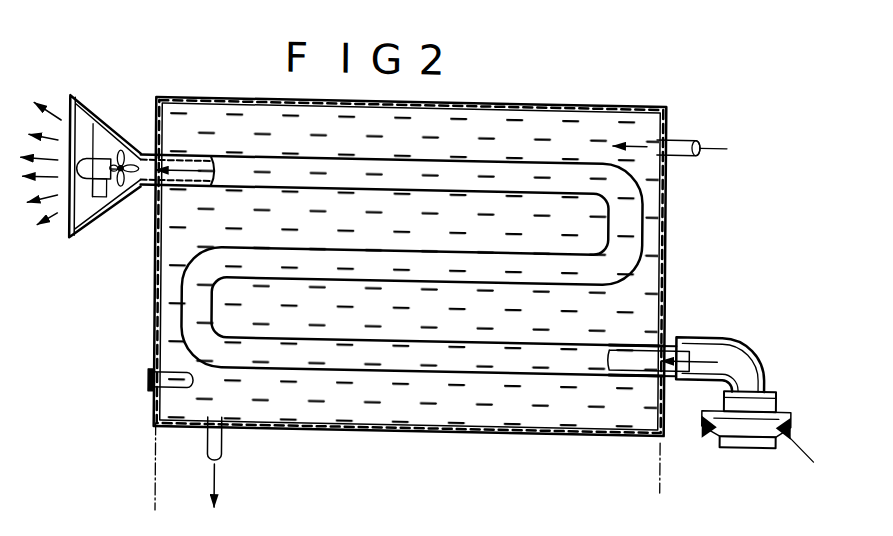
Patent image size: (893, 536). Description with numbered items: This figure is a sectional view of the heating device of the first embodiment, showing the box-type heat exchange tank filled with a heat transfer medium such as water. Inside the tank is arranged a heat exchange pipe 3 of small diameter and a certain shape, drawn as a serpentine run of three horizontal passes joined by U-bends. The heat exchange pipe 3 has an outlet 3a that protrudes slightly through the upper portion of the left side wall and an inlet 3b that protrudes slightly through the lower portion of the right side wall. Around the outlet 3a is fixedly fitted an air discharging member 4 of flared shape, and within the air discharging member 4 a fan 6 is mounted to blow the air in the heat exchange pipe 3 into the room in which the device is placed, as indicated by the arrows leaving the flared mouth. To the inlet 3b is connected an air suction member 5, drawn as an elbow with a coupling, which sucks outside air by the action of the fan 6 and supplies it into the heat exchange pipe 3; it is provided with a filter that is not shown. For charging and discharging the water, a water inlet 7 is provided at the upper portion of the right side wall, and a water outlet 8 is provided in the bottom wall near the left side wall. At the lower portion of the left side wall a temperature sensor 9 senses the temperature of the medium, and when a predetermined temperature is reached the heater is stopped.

The heat exchange pipe 3 is at (474, 160).
The outlet 3a is at (147, 157).
The inlet 3b is at (688, 372).
The air discharging member 4 is at (99, 123).
The air suction member 5 is at (780, 402).
The fan 6 is at (108, 216).
The water inlet 7 is at (690, 134).
The water outlet 8 is at (208, 451).
The temperature sensor 9 is at (179, 390).